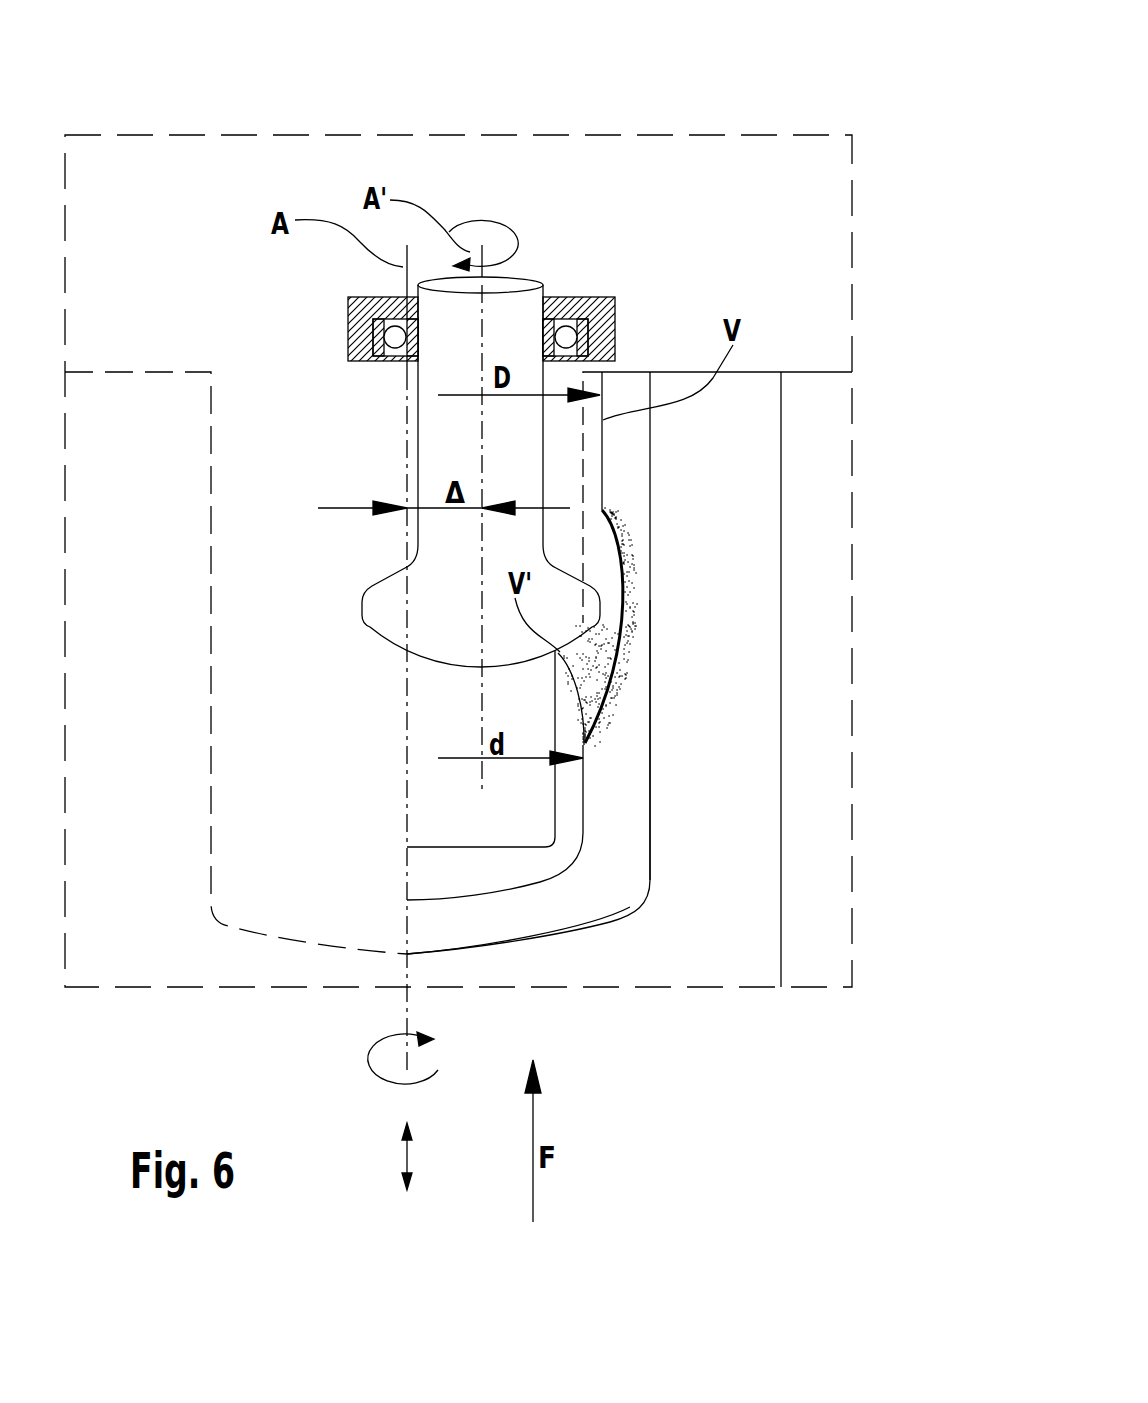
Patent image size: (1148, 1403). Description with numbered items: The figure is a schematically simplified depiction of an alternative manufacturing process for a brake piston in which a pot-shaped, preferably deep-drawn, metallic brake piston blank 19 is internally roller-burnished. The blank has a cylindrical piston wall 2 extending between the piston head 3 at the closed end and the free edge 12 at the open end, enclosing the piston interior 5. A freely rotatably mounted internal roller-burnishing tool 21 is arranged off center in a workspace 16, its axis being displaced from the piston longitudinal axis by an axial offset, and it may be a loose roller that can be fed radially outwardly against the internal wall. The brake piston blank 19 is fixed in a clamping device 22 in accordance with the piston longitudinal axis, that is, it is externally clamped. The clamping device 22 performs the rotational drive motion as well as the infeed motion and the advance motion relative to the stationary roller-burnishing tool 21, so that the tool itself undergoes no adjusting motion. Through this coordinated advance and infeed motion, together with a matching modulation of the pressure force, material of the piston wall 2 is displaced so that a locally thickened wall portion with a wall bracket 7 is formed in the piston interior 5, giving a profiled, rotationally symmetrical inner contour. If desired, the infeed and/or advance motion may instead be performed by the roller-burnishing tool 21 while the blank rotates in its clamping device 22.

The piston wall 2 is at (628, 465).
The piston head 3 is at (490, 920).
The piston interior 5 is at (447, 886).
The wall bracket 7 is at (622, 681).
The edge 12 is at (625, 370).
The workspace 16 is at (763, 177).
The brake piston blank 19 is at (682, 826).
The roller-burnishing tool 21 is at (522, 310).
The clamping device 22 is at (740, 568).